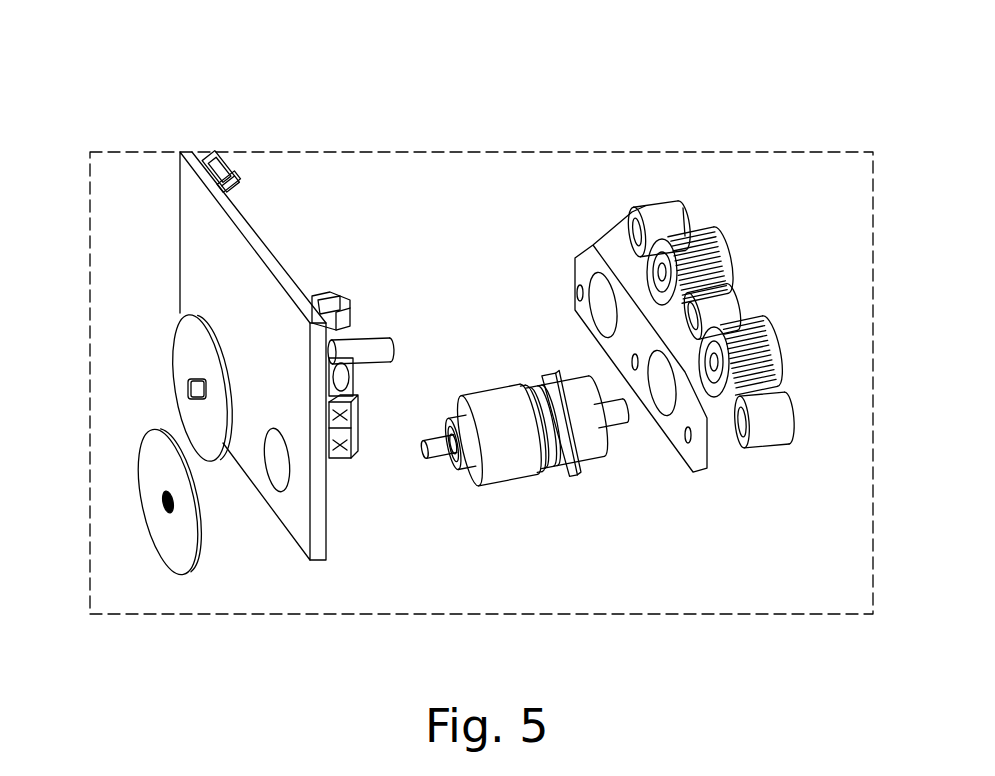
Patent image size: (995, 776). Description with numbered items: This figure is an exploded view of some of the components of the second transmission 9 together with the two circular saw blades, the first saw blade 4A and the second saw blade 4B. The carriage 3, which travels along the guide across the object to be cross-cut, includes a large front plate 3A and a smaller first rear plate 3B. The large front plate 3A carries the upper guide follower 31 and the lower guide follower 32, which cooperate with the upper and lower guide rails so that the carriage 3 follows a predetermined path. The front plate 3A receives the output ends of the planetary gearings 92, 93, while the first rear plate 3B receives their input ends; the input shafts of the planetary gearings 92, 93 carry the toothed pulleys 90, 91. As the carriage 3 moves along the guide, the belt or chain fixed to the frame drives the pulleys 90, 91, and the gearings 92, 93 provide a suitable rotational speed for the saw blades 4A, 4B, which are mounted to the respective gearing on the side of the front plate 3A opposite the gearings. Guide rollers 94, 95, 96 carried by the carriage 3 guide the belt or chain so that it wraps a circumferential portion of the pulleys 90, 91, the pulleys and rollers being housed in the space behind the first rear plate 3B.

The second transmission 9 is at (508, 120).
The carriage 3 is at (255, 361).
The large front plate 3A is at (243, 272).
The first rear plate 3B is at (592, 247).
The upper guide follower 31 is at (218, 150).
The lower guide follower 32 is at (342, 460).
The first saw blade 4A is at (160, 543).
The second saw blade 4B is at (177, 378).
The toothed pulley 90 is at (775, 350).
The toothed pulley 91 is at (715, 240).
The planetary gearing 92 is at (512, 478).
The planetary gearing 93 is at (362, 345).
The guide roller 94 is at (662, 223).
The guide roller 95 is at (772, 423).
The guide roller 96 is at (733, 300).